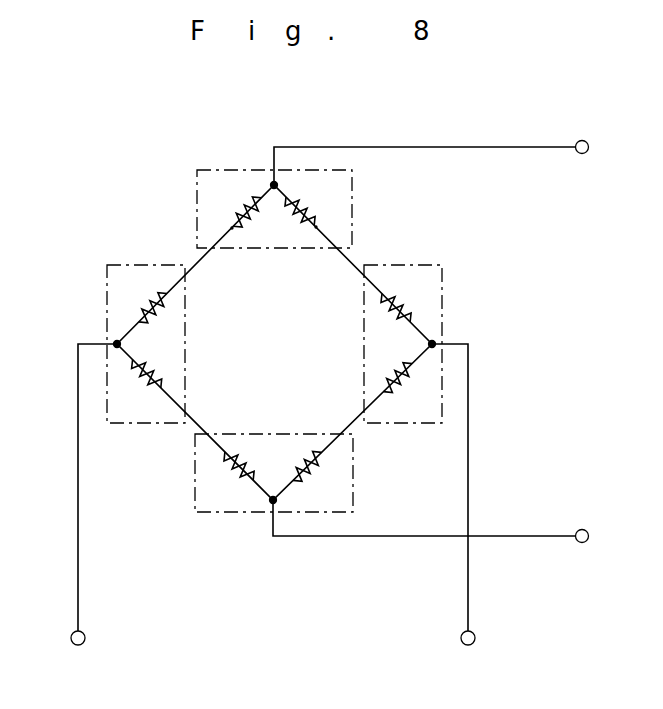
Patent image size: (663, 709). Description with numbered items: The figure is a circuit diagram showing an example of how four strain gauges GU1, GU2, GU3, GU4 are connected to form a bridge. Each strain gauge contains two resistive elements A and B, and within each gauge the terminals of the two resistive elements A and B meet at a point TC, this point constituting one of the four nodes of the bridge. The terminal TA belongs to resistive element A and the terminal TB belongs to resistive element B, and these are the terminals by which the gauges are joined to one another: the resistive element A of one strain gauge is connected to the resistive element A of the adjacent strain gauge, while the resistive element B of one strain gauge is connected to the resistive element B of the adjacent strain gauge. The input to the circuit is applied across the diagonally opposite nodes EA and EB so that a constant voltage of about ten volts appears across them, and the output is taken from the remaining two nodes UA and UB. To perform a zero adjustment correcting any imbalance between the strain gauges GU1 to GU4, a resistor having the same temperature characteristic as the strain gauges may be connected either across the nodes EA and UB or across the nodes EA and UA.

The strain gauge GU1 is at (213, 169).
The strain gauge GU2 is at (107, 283).
The strain gauge GU3 is at (215, 513).
The strain gauge GU4 is at (443, 290).
The resistive element A is at (233, 214).
The resistive element B is at (316, 212).
The terminal TA is at (232, 230).
The terminal TB is at (316, 230).
The point TC is at (272, 184).
The node EA is at (450, 161).
The node EB is at (449, 525).
The node UA is at (88, 510).
The node UB is at (456, 510).